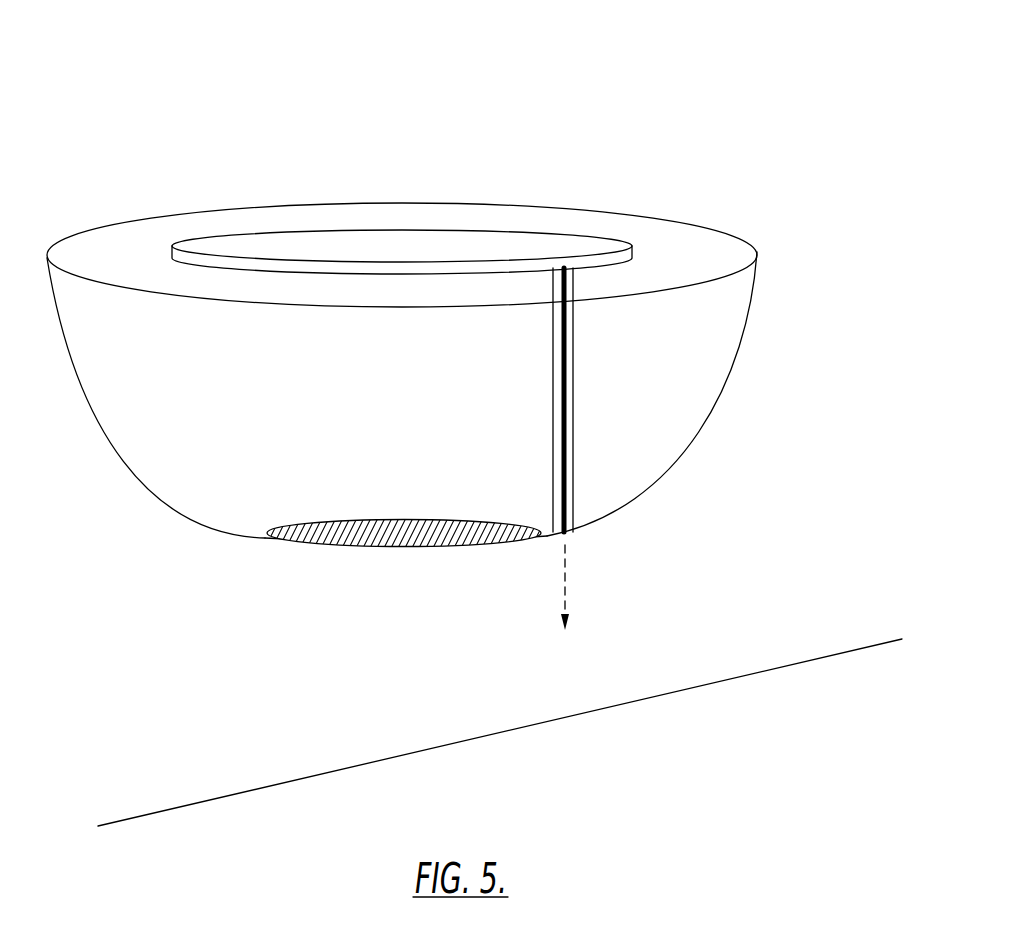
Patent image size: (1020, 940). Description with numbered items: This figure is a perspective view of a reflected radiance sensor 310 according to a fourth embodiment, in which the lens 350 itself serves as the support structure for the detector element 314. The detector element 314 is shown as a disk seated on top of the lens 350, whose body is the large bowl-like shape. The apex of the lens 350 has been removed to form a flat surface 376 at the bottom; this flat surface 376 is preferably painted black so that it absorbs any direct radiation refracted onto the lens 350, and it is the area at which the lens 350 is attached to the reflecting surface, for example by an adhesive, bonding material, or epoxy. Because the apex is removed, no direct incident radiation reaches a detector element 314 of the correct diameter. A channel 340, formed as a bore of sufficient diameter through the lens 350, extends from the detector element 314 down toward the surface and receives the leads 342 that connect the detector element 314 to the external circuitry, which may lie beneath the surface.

The reflected radiance sensor 310 is at (538, 79).
The detector element 314 is at (490, 245).
The channel 340 is at (575, 410).
The leads 342 is at (562, 462).
The lens 350 is at (736, 353).
The flat surface 376 is at (210, 545).